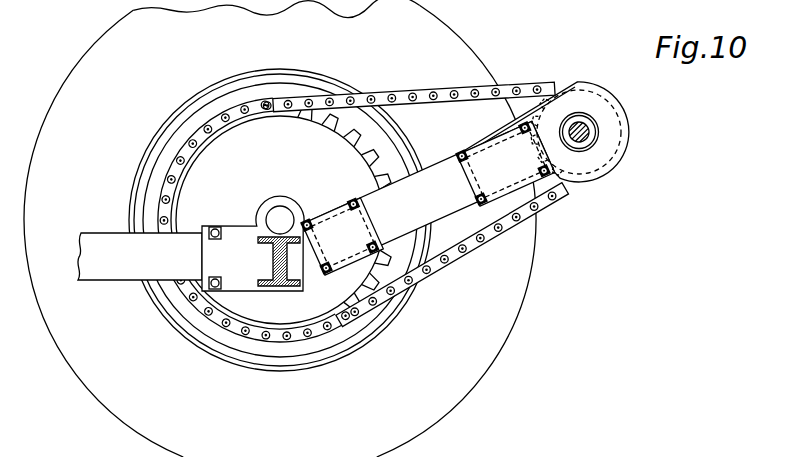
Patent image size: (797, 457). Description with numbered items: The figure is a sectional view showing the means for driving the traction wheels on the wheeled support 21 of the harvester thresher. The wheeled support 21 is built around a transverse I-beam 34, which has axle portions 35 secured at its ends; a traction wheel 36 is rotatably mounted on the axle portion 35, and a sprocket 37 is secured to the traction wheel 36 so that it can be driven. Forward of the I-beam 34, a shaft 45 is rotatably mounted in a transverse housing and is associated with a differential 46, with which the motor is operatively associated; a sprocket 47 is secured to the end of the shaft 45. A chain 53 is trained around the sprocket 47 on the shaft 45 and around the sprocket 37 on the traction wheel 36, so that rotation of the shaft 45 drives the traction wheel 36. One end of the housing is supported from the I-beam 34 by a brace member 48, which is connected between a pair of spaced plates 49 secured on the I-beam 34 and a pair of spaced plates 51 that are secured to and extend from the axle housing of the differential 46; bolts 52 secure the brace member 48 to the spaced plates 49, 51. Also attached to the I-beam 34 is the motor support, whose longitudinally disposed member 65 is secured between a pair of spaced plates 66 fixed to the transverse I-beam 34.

The wheeled support 21 is at (82, 42).
The transverse I-beam 34 is at (281, 286).
The axle portions 35 is at (279, 218).
The traction wheel 36 is at (478, 366).
The sprocket 37 is at (214, 150).
The shaft 45 is at (598, 119).
The differential 46 is at (596, 123).
The sprocket 47 is at (626, 145).
The brace member 48 is at (445, 200).
The spaced plates 49 is at (330, 224).
The spaced plates 51 is at (565, 192).
The bolts 52 is at (368, 250).
The chain 53 is at (440, 268).
The longitudinally disposed member 65 is at (108, 274).
The spaced plates 66 is at (229, 242).